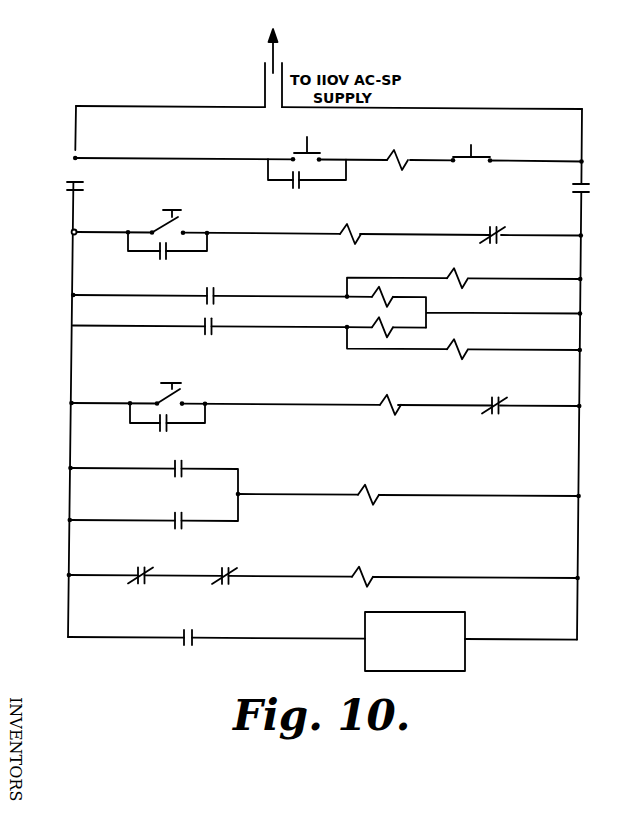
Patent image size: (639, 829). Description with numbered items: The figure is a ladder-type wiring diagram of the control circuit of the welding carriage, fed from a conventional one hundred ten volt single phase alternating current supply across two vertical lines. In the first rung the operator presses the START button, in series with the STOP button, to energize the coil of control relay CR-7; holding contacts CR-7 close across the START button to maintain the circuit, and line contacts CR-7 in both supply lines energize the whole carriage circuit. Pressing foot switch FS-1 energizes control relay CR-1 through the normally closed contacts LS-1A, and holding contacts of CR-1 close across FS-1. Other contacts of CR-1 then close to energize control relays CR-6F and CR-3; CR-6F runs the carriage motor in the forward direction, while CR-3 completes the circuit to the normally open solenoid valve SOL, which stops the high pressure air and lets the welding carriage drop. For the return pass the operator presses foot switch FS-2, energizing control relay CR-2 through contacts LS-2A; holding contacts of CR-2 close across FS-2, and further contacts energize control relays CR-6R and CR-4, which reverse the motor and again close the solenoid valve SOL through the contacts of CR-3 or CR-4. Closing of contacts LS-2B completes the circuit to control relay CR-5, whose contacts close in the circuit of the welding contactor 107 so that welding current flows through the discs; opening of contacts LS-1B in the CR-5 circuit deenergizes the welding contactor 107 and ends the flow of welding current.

The welding contactor 107 is at (458, 657).
The control relay CR-7 is at (325, 177).
The control relay CR-1 is at (247, 256).
The control relay CR-2 is at (268, 377).
The control relay CR-3 is at (342, 376).
The control relay CR-4 is at (342, 436).
The control relay CR-5 is at (288, 611).
The control relay CR-6F is at (403, 293).
The control relay CR-6R is at (406, 332).
The foot switch FS-1 is at (166, 212).
The foot switch FS-2 is at (163, 385).
The contacts LS-1A is at (493, 226).
The contacts LS-1B is at (228, 584).
The contacts LS-2A is at (501, 396).
The contacts LS-2B is at (145, 584).
The start button START is at (297, 141).
The stop button STOP is at (471, 146).
The solenoid valve SOL is at (403, 486).